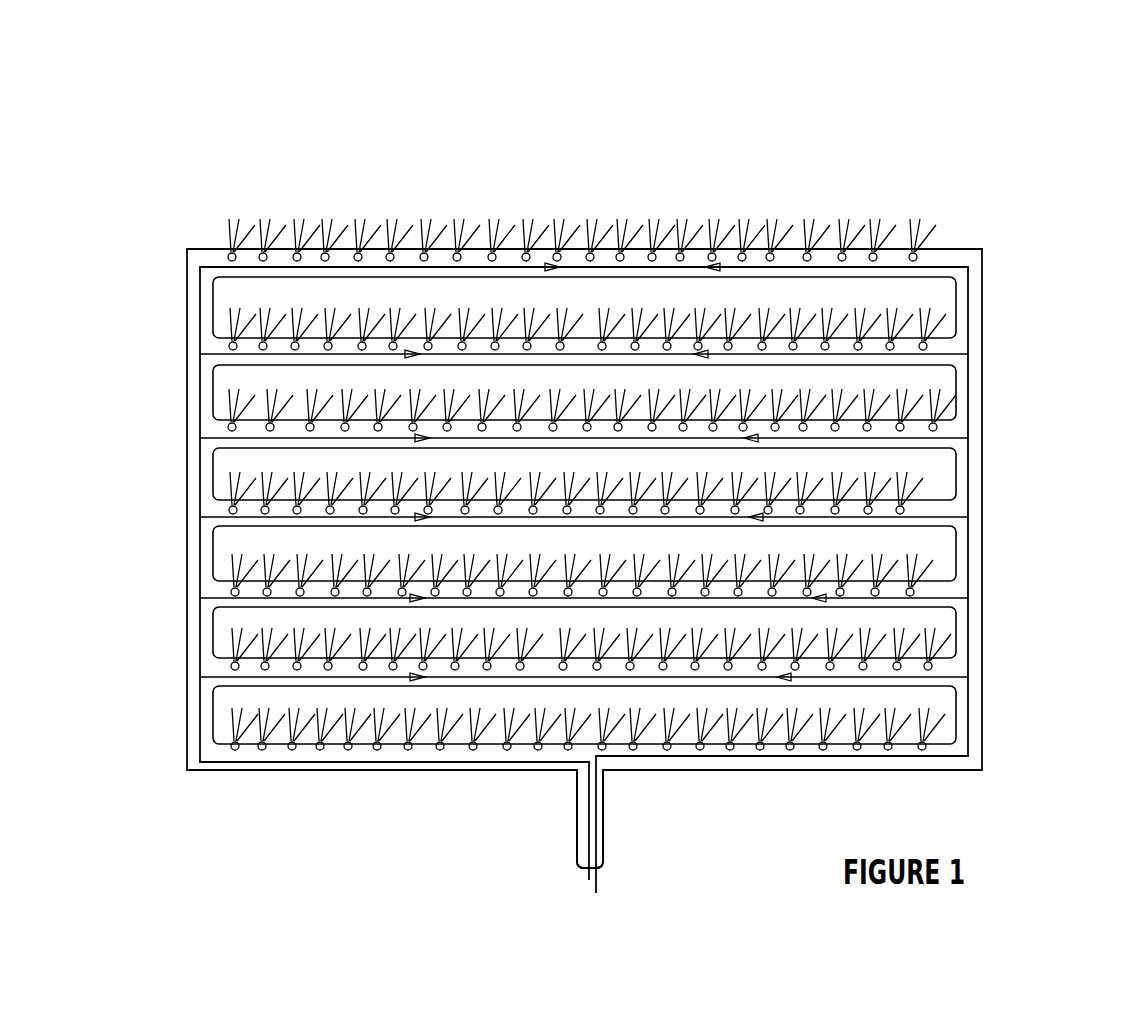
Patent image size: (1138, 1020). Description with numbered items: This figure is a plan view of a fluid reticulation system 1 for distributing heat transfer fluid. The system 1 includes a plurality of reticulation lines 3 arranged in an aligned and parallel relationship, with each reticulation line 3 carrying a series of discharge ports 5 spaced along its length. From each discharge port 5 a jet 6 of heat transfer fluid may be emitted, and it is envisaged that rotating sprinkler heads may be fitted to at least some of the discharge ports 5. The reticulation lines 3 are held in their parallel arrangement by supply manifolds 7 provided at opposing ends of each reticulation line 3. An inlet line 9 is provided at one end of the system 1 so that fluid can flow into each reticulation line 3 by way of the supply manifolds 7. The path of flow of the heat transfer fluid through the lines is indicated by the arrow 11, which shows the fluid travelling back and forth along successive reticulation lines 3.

The fluid reticulation system 1 is at (138, 173).
The reticulation line 3 is at (942, 243).
The discharge port 5 is at (913, 502).
The jet 6 is at (228, 240).
The supply manifold 7 is at (985, 702).
The inlet line 9 is at (574, 815).
The arrow 11 is at (967, 272).